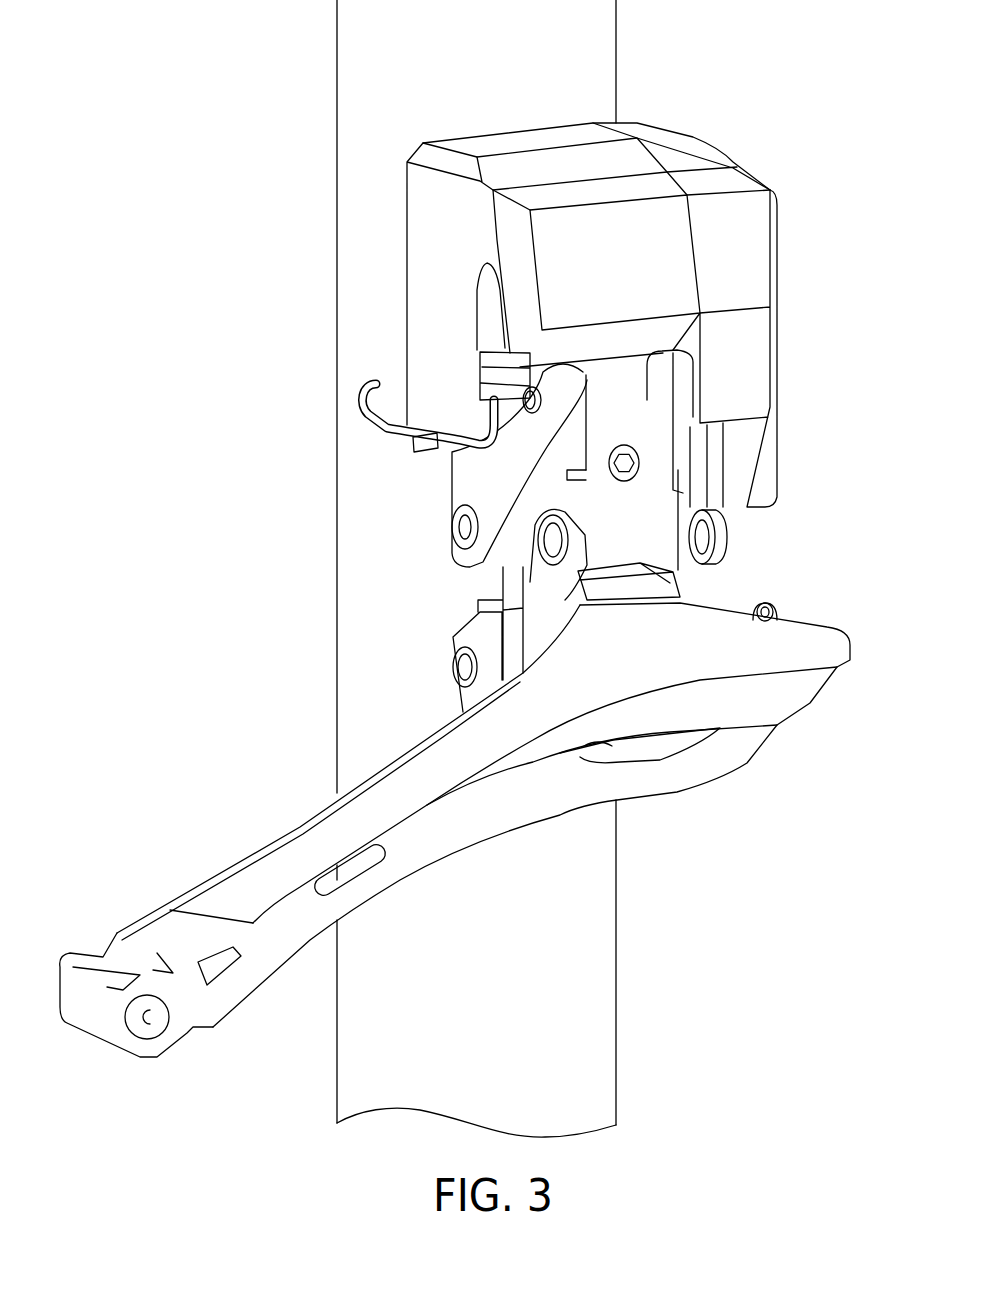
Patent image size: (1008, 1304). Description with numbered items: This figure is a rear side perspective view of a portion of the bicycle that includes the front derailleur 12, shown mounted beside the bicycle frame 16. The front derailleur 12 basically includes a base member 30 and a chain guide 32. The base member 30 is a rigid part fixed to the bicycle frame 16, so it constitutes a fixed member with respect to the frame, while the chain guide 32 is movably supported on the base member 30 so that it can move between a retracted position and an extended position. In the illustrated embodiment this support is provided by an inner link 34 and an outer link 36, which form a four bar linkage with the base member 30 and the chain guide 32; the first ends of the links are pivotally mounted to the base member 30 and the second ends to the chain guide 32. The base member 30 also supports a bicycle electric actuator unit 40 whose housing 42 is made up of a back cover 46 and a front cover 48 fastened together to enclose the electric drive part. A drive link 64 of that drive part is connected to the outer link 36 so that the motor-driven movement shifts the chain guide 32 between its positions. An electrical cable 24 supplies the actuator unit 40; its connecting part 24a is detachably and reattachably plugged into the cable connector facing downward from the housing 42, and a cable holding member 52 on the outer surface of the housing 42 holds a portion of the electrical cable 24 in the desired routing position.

The front derailleur 12 is at (819, 145).
The bicycle frame 16 is at (330, 38).
The electrical cable 24 is at (398, 432).
The connecting part 24a is at (478, 374).
The base member 30 is at (440, 504).
The chain guide 32 is at (250, 838).
The inner link 34 is at (497, 587).
The outer link 36 is at (655, 450).
The bicycle electric actuator unit 40 is at (398, 230).
The housing 42 is at (596, 112).
The back cover 46 is at (537, 137).
The front cover 48 is at (623, 134).
The cable holding member 52 is at (418, 452).
The drive link 64 is at (740, 528).